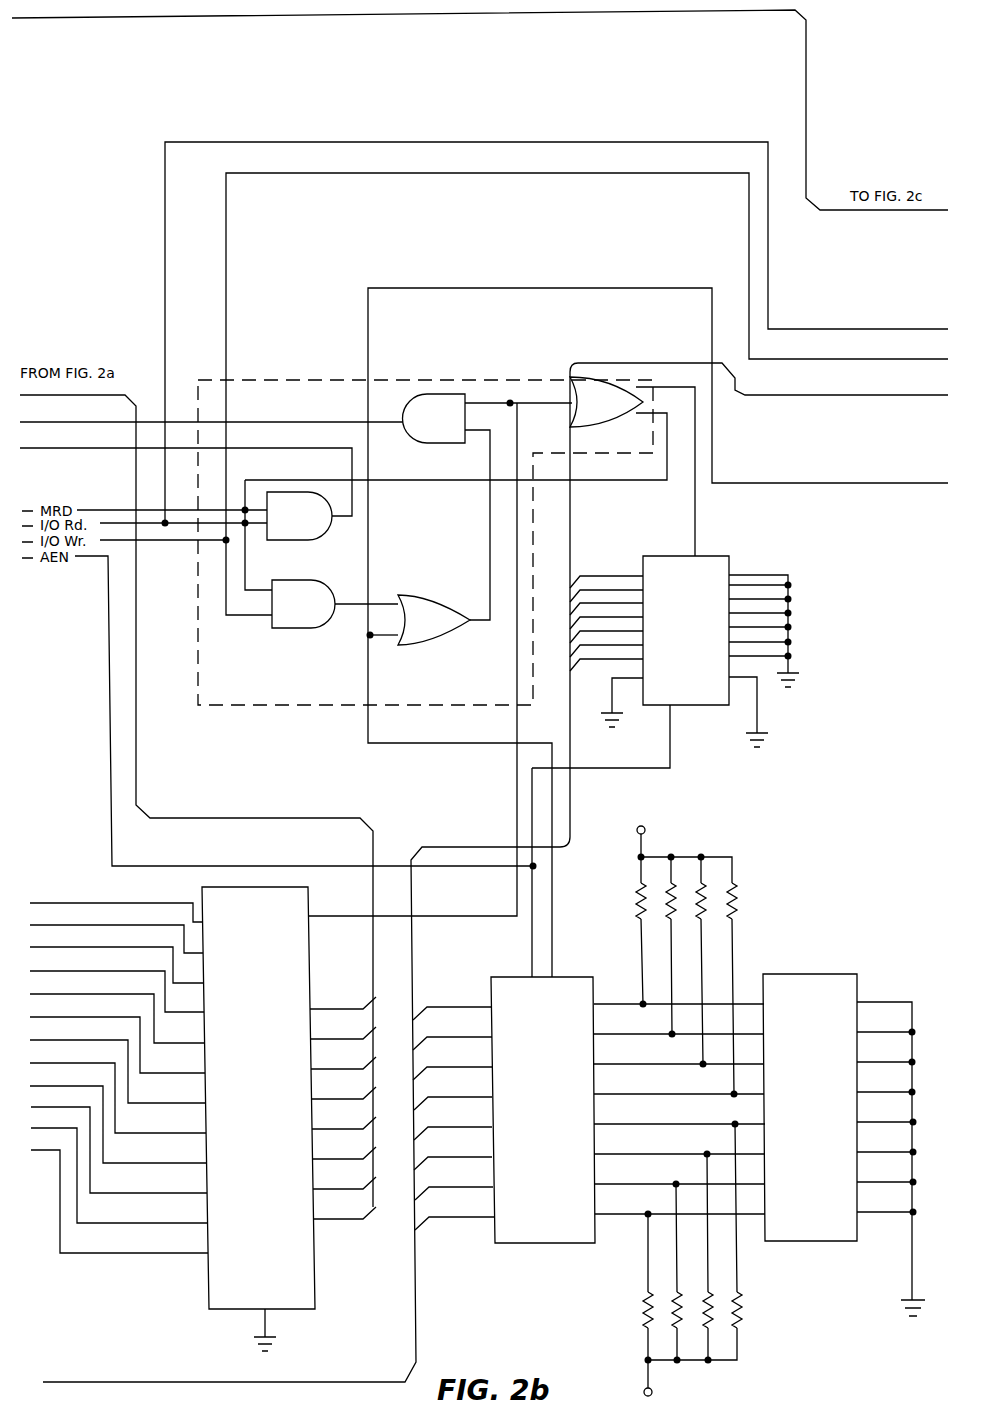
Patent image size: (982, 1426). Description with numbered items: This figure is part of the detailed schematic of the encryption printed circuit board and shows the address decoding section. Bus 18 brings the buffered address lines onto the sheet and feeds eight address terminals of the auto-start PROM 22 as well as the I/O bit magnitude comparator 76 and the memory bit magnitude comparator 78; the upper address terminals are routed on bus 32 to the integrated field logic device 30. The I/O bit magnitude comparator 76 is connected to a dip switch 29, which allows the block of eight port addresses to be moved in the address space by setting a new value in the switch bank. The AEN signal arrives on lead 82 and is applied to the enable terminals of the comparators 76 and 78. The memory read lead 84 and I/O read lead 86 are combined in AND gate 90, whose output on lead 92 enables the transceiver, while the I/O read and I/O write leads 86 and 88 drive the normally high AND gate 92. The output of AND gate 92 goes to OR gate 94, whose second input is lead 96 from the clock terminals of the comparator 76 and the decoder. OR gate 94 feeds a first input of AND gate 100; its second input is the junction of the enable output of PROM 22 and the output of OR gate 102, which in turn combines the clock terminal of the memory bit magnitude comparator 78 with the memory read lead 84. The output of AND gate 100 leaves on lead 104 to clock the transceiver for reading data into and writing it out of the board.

The bus 18 is at (902, 392).
The auto-start PROM 22 is at (205, 1297).
The dip switch 29 is at (806, 1243).
The integrated field logic device 30 is at (473, 374).
The address bus 32 is at (917, 218).
The I/O bit magnitude comparator 76 is at (525, 1243).
The memory bit magnitude comparator 78 is at (712, 705).
The lead 82 is at (97, 560).
The memory read lead 84 is at (105, 510).
The I/O read lead 86 is at (882, 331).
The I/O write lead 88 is at (882, 361).
The AND gate 90 is at (323, 540).
The AND gate 92 is at (85, 454).
The OR gate 94 is at (436, 645).
The lead 96 is at (904, 485).
The AND gate 100 is at (440, 443).
The OR gate 102 is at (626, 428).
The lead 104 is at (99, 426).